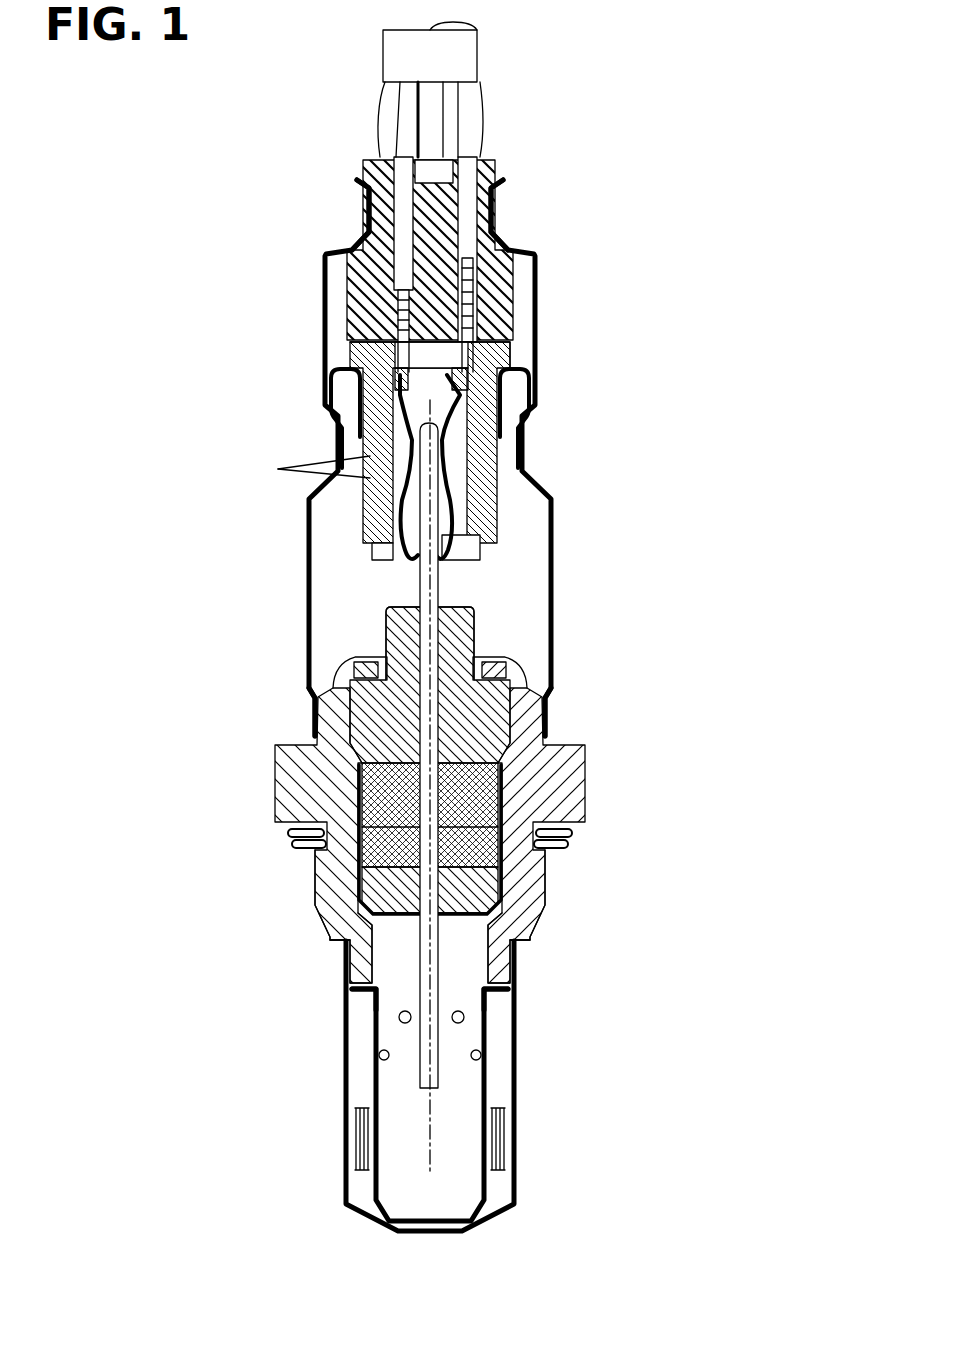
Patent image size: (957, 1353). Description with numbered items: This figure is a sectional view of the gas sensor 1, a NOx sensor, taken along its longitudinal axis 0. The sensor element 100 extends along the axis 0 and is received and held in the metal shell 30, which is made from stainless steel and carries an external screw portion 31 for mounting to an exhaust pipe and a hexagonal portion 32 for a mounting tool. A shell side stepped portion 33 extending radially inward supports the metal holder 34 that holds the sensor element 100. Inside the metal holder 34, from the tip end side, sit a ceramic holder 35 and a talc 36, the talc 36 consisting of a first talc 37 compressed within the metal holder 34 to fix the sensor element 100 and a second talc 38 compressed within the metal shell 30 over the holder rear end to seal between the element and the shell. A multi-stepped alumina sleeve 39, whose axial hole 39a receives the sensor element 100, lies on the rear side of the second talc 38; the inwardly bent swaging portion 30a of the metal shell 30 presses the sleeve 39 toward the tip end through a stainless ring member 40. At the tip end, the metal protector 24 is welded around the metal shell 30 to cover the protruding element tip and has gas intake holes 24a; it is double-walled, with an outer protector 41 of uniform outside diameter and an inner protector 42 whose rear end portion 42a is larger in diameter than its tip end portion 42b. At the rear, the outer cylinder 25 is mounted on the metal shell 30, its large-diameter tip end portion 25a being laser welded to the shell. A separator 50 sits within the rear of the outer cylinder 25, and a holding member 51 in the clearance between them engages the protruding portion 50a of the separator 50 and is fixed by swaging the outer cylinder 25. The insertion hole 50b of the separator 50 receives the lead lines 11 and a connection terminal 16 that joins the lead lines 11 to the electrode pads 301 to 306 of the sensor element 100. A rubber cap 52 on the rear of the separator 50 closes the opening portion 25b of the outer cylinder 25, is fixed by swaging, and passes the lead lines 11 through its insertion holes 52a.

The gas sensor 1 is at (470, 652).
The lead lines 11 is at (463, 110).
The connection terminal 16 is at (455, 420).
The protector 24 is at (427, 1112).
The gas intake holes 24a is at (462, 1010).
The outer cylinder 25 is at (460, 452).
The tip end portion 25a is at (551, 717).
The opening portion 25b is at (484, 210).
The metal shell 30 is at (477, 798).
The swaging portion 30a is at (500, 660).
The external screw portion 31 is at (540, 904).
The hexagonal portion 32 is at (586, 770).
The shell side stepped portion 33 is at (492, 885).
The metal holder 34 is at (340, 927).
The ceramic holder 35 is at (385, 890).
The talc 36 is at (328, 838).
The first talc 37 is at (357, 848).
The second talc 38 is at (357, 786).
The sleeve 39 is at (363, 685).
The axial hole 39a is at (425, 627).
The ring member 40 is at (500, 672).
The outer protector 41 is at (522, 1143).
The inner protector 42 is at (368, 1104).
The rear end portion 42a is at (357, 988).
The tip end portion 42b is at (373, 1100).
The separator 50 is at (401, 454).
The protruding portion 50a is at (512, 357).
The insertion hole 50b is at (452, 552).
The holding member 51 is at (333, 384).
The rubber cap 52 is at (446, 251).
The insertion holes 52a is at (476, 228).
The sensor element 100 is at (435, 1078).
The electrode pad 301 is at (370, 468).
The electrode pad 306 is at (324, 473).
The axis 0 is at (432, 1165).